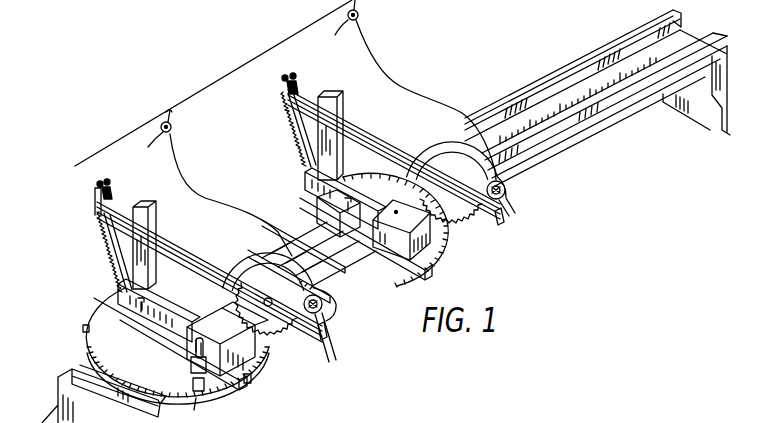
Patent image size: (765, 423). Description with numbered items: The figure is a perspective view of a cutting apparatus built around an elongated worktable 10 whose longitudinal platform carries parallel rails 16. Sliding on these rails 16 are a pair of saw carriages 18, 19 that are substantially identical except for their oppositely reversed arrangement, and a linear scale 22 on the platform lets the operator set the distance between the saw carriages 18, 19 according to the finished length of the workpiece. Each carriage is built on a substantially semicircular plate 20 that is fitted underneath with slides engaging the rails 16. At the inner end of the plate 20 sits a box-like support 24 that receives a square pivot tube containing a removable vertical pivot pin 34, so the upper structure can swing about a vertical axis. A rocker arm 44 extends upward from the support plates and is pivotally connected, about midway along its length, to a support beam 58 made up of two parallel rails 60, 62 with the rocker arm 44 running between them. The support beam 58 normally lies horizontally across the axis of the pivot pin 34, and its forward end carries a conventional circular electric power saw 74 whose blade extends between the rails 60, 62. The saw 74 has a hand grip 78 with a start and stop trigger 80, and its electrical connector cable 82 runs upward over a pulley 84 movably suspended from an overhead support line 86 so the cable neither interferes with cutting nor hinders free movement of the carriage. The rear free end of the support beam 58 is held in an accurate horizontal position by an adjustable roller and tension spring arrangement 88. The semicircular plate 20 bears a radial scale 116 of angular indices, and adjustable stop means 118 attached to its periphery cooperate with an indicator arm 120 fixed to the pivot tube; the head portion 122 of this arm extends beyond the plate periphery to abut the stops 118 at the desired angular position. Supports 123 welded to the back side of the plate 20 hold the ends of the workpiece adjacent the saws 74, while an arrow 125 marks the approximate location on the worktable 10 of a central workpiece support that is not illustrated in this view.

The worktable 10 is at (520, 254).
The rails 16 is at (82, 370).
The saw carriage 18 is at (186, 233).
The saw carriage 19 is at (383, 130).
The semicircular plate 20 is at (257, 363).
The linear scale 22 is at (603, 87).
The support 24 is at (239, 268).
The pivot pin 34 is at (207, 304).
The rocker arm 44 is at (146, 208).
The support beam 58 is at (197, 262).
The rail 60 is at (329, 362).
The rail 62 is at (336, 360).
The circular electric power saw 74 is at (261, 242).
The hand grip 78 is at (325, 300).
The start and stop trigger 80 is at (328, 320).
The electrical connector cable 82 is at (201, 177).
The pulley 84 is at (172, 128).
The overhead support line 86 is at (272, 48).
The adjustable roller and tension spring arrangement 88 is at (126, 194).
The radial scale 116 is at (97, 318).
The adjustable stop means 118 is at (83, 328).
The indicator arm 120 is at (191, 365).
The head portion 122 is at (196, 403).
The support 123 is at (182, 301).
The arrow 125 is at (374, 281).